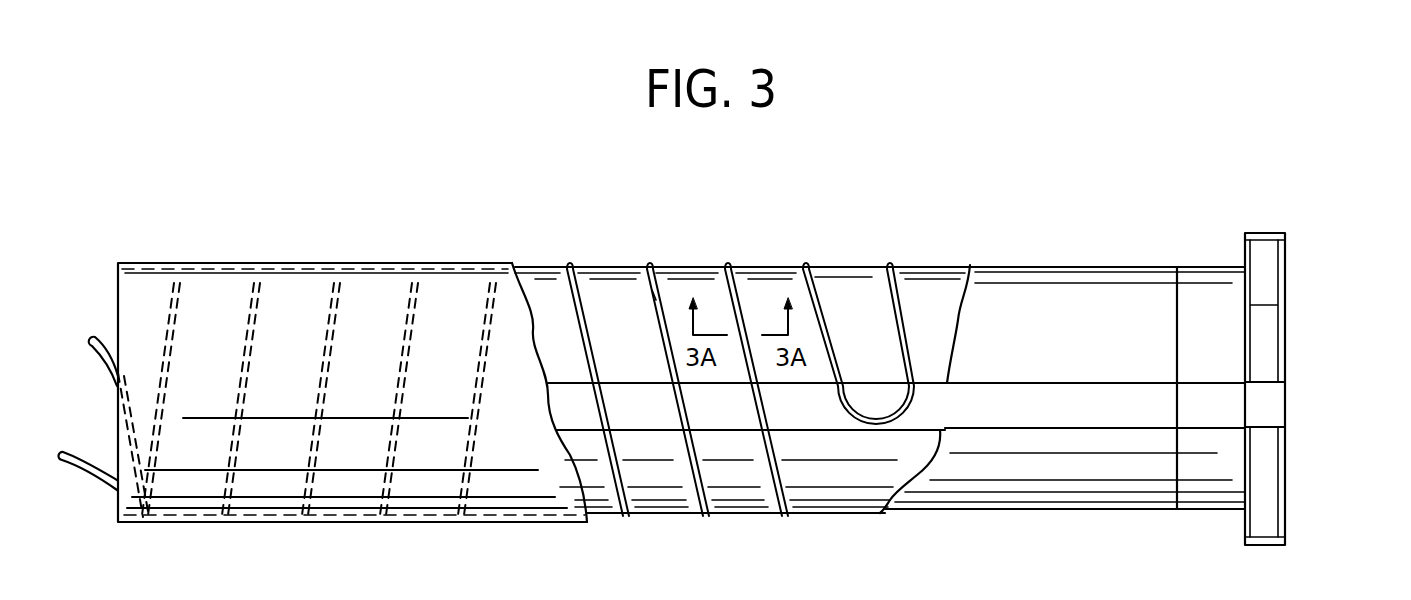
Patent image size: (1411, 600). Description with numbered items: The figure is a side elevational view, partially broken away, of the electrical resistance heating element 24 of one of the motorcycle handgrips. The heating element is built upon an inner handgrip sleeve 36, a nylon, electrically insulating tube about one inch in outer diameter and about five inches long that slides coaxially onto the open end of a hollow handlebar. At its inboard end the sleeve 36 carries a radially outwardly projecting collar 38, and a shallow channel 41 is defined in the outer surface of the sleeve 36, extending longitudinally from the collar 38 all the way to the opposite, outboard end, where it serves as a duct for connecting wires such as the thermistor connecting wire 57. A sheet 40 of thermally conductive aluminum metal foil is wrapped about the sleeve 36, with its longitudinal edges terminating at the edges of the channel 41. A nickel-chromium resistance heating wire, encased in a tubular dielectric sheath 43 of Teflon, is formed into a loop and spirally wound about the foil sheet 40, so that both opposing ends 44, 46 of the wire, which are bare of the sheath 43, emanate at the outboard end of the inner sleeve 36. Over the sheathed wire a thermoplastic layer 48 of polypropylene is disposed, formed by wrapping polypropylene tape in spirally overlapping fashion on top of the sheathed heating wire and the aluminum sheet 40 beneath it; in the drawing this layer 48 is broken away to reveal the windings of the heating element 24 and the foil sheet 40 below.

The electrical resistance heating element 24 is at (735, 262).
The inner handgrip sleeve 36 is at (1058, 298).
The collar 38 is at (1263, 493).
The sheet of thermally conductive aluminum metal foil 40 is at (607, 308).
The shallow channel 41 is at (1042, 412).
The dielectric sheath 43 is at (667, 303).
The end of the heating wire 44 is at (107, 335).
The end of the heating wire 46 is at (92, 470).
The thermoplastic layer 48 is at (365, 307).
The thermistor connecting wire 57 is at (1270, 403).